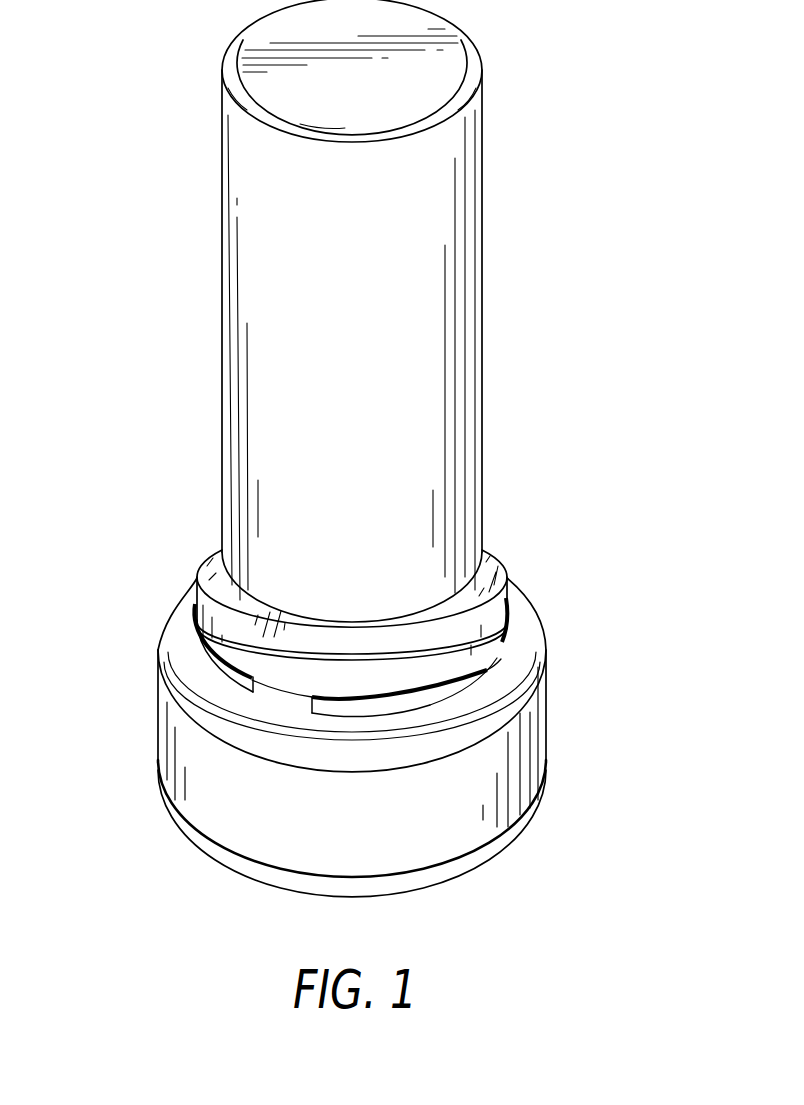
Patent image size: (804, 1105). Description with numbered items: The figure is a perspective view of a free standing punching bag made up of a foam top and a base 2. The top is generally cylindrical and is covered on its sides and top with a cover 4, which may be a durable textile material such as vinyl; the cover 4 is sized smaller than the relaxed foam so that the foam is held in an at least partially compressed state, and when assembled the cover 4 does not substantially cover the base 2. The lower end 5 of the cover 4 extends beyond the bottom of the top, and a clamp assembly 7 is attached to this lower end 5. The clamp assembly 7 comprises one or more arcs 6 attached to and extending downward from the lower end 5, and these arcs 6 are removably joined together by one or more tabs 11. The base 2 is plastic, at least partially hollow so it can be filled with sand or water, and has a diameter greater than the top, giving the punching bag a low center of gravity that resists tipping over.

The base 2 is at (523, 747).
The cover 4 is at (430, 288).
The lower end 5 is at (497, 613).
The arc 6 is at (276, 693).
The clamp assembly 7 is at (172, 603).
The tab 11 is at (203, 652).